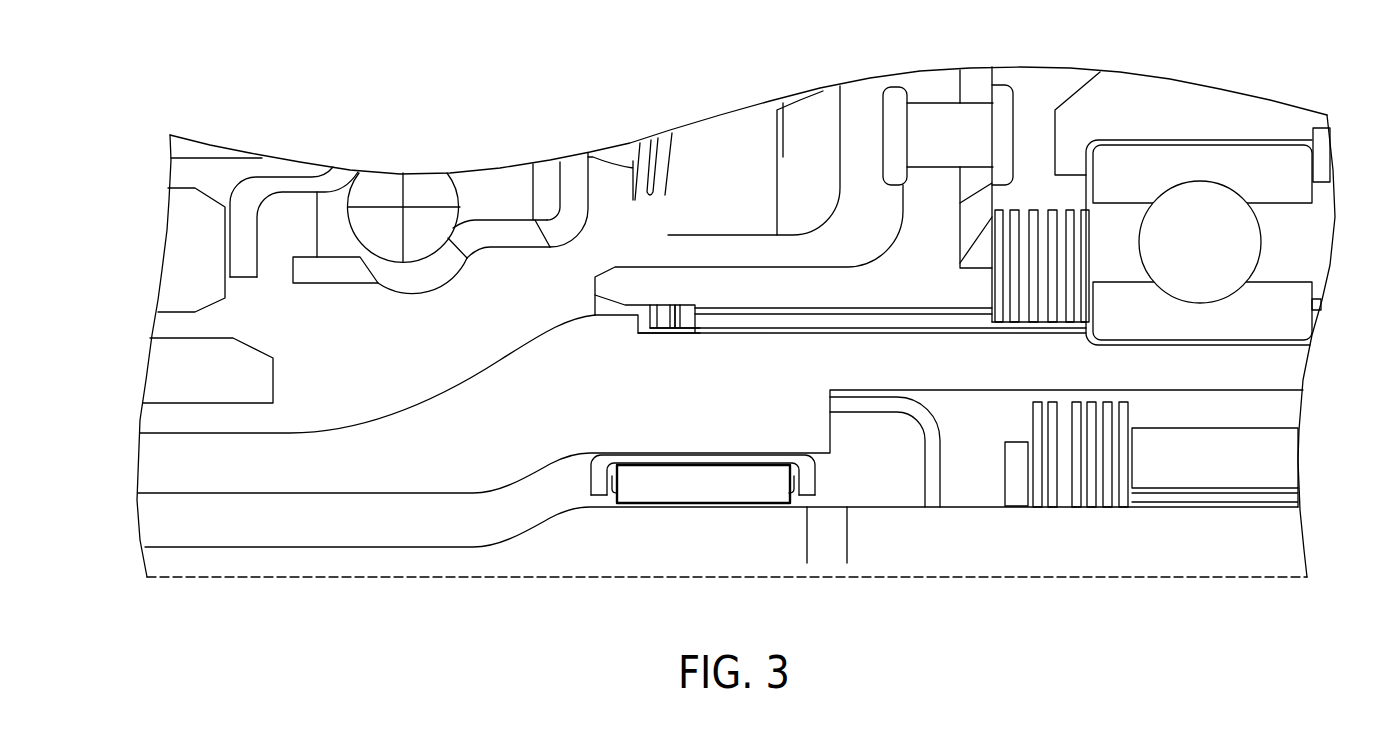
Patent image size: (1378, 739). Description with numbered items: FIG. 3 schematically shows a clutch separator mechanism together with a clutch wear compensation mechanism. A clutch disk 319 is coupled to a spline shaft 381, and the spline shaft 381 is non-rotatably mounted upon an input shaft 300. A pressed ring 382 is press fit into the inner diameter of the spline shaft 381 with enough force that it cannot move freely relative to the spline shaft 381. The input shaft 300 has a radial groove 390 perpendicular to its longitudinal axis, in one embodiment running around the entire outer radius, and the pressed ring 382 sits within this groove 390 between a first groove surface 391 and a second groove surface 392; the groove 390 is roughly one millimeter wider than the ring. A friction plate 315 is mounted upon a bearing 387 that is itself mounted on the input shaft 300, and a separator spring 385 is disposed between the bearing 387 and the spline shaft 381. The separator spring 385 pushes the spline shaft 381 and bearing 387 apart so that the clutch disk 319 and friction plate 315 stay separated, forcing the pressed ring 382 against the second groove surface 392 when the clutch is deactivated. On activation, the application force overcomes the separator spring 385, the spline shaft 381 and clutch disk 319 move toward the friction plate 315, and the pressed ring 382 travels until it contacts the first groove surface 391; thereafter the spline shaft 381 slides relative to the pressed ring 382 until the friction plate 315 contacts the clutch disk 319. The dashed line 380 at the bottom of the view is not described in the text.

The input shaft 300 is at (152, 468).
The friction plate 315 is at (1183, 98).
The clutch disk 319 is at (934, 90).
The engine centerline axis 380 is at (933, 580).
The spline shaft 381 is at (695, 283).
The pressed ring 382 is at (672, 337).
The separator spring 385 is at (1035, 218).
The bearing 387 is at (1253, 238).
The radial groove 390 is at (686, 345).
The first groove surface 391 is at (682, 317).
The second groove surface 392 is at (659, 323).